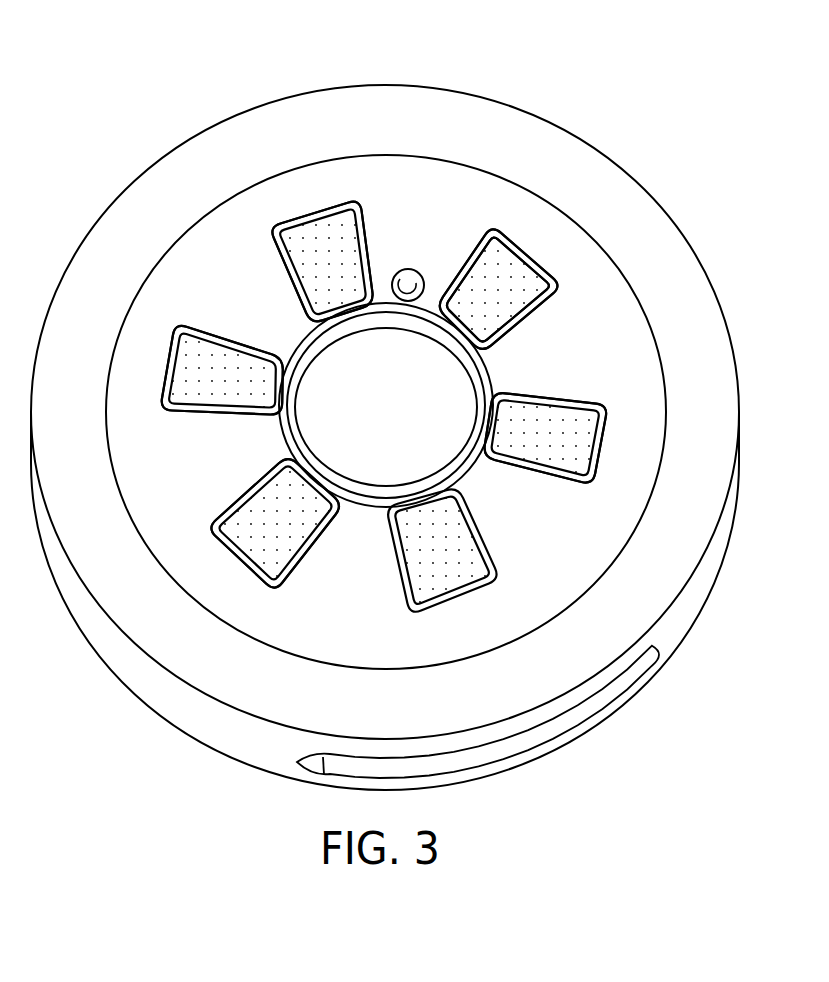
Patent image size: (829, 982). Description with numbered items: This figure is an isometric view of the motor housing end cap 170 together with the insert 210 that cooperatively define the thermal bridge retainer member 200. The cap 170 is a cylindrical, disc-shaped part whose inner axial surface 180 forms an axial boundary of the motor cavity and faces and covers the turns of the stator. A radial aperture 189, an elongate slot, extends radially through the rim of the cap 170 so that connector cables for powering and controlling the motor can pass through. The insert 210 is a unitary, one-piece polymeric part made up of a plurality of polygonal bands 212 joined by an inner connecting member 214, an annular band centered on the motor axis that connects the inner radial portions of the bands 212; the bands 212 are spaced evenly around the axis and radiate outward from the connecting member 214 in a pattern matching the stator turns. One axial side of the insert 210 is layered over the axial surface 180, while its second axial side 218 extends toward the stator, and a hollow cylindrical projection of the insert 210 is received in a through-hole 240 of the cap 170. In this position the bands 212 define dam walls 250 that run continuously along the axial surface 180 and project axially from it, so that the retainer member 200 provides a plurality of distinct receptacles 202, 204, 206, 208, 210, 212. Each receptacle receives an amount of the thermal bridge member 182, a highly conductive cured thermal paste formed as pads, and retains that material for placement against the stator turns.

The cap 170 is at (206, 120).
The axial surface 180 is at (177, 474).
The thermal bridge member 182 is at (520, 298).
The radial aperture 189 is at (577, 717).
The thermal bridge retainer member 200 is at (443, 270).
The receptacle 202 is at (293, 243).
The receptacle 204 is at (492, 320).
The receptacle 206 is at (568, 467).
The receptacle 208 is at (477, 565).
The insert 210 is at (617, 427).
The bands 212 is at (300, 210).
The inner connecting member 214 is at (297, 346).
The second axial side 218 is at (228, 337).
The through-hole 240 is at (407, 269).
The dam walls 250 is at (297, 570).